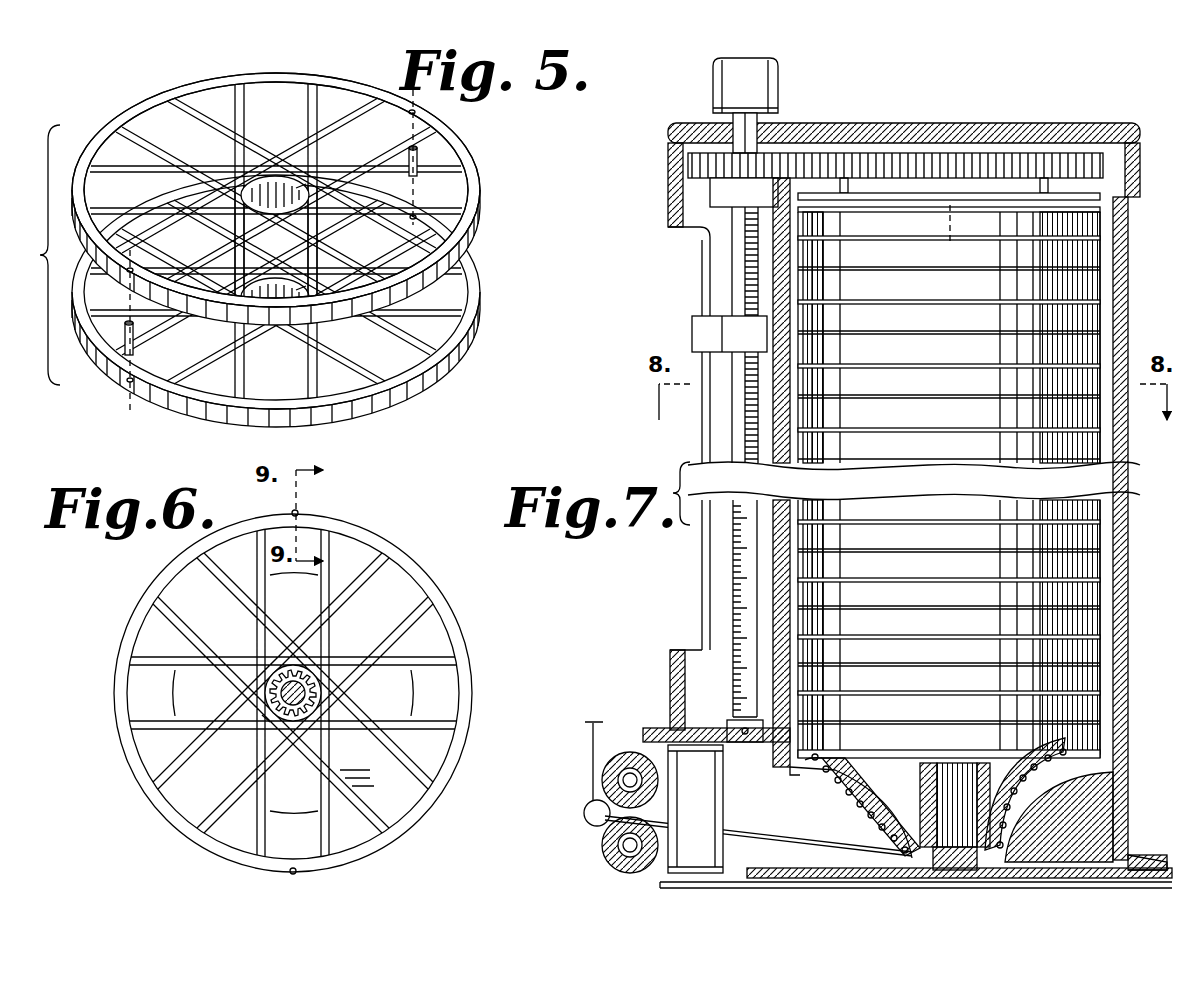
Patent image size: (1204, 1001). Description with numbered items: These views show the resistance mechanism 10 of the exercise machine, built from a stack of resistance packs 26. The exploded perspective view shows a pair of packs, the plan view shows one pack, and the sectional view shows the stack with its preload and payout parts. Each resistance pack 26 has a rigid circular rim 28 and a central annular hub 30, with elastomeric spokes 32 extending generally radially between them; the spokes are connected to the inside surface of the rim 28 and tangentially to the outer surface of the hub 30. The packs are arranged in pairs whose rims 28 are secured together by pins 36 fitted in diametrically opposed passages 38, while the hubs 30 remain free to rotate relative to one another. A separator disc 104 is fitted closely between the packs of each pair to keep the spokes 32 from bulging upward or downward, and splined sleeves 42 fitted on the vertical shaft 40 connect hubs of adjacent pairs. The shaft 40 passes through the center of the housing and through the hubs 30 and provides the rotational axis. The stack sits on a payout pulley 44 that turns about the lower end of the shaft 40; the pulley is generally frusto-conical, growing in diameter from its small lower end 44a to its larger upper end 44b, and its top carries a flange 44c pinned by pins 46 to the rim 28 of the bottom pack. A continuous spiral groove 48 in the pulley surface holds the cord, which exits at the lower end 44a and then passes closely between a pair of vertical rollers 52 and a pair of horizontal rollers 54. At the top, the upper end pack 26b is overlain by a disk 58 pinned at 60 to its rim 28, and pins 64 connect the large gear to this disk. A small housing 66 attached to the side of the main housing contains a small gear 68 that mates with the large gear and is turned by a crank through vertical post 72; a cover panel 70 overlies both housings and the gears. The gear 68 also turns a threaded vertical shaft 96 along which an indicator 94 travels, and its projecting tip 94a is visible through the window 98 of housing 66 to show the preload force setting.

In FIG. 7, the tape cartridge assembly 10 is at (870, 487).
In FIG. 5, the resistance pack 26 is at (298, 253).
In FIG. 6, the resistance pack 26 is at (280, 690).
In FIG. 7, the resistance pack 26 is at (989, 457).
In FIG. 7, the upper end pack 26b is at (1120, 215).
In FIG. 6, the rim 28 is at (138, 600).
In FIG. 6, the hub 30 is at (322, 672).
In FIG. 6, the elastomeric spokes 32 is at (215, 670).
In FIG. 5, the pins 36 is at (418, 160).
In FIG. 5, the passages 38 is at (127, 382).
In FIG. 6, the passages 38 is at (292, 873).
In FIG. 6, the vertical shaft 40 is at (293, 680).
In FIG. 7, the vertical shaft 40 is at (955, 222).
In FIG. 6, the splined sleeves 42 is at (268, 722).
In FIG. 7, the payout pulley 44 is at (979, 840).
In FIG. 7, the lower end of pulley 44a is at (935, 860).
In FIG. 7, the upper end of pulley 44b is at (850, 775).
In FIG. 7, the flange 44c is at (820, 790).
In FIG. 7, the pins 46 is at (1040, 750).
In FIG. 7, the spiral groove 48 is at (862, 806).
In FIG. 7, the vertical rollers 52 is at (668, 870).
In FIG. 7, the horizontal rollers 54 is at (612, 850).
In FIG. 7, the disk 58 is at (1105, 196).
In FIG. 7, the pin connection 60 is at (835, 212).
In FIG. 7, the pins 64 is at (1046, 180).
In FIG. 7, the small housing 66 is at (668, 192).
In FIG. 7, the small gear 68 is at (688, 162).
In FIG. 7, the cover panel 70 is at (820, 126).
In FIG. 7, the vertical post 72 is at (778, 90).
In FIG. 7, the indicator 94 is at (735, 300).
In FIG. 7, the projecting tip 94a is at (692, 332).
In FIG. 7, the threaded vertical shaft 96 is at (745, 580).
In FIG. 7, the window 98 is at (702, 625).
In FIG. 6, the separator disc 104 is at (360, 770).